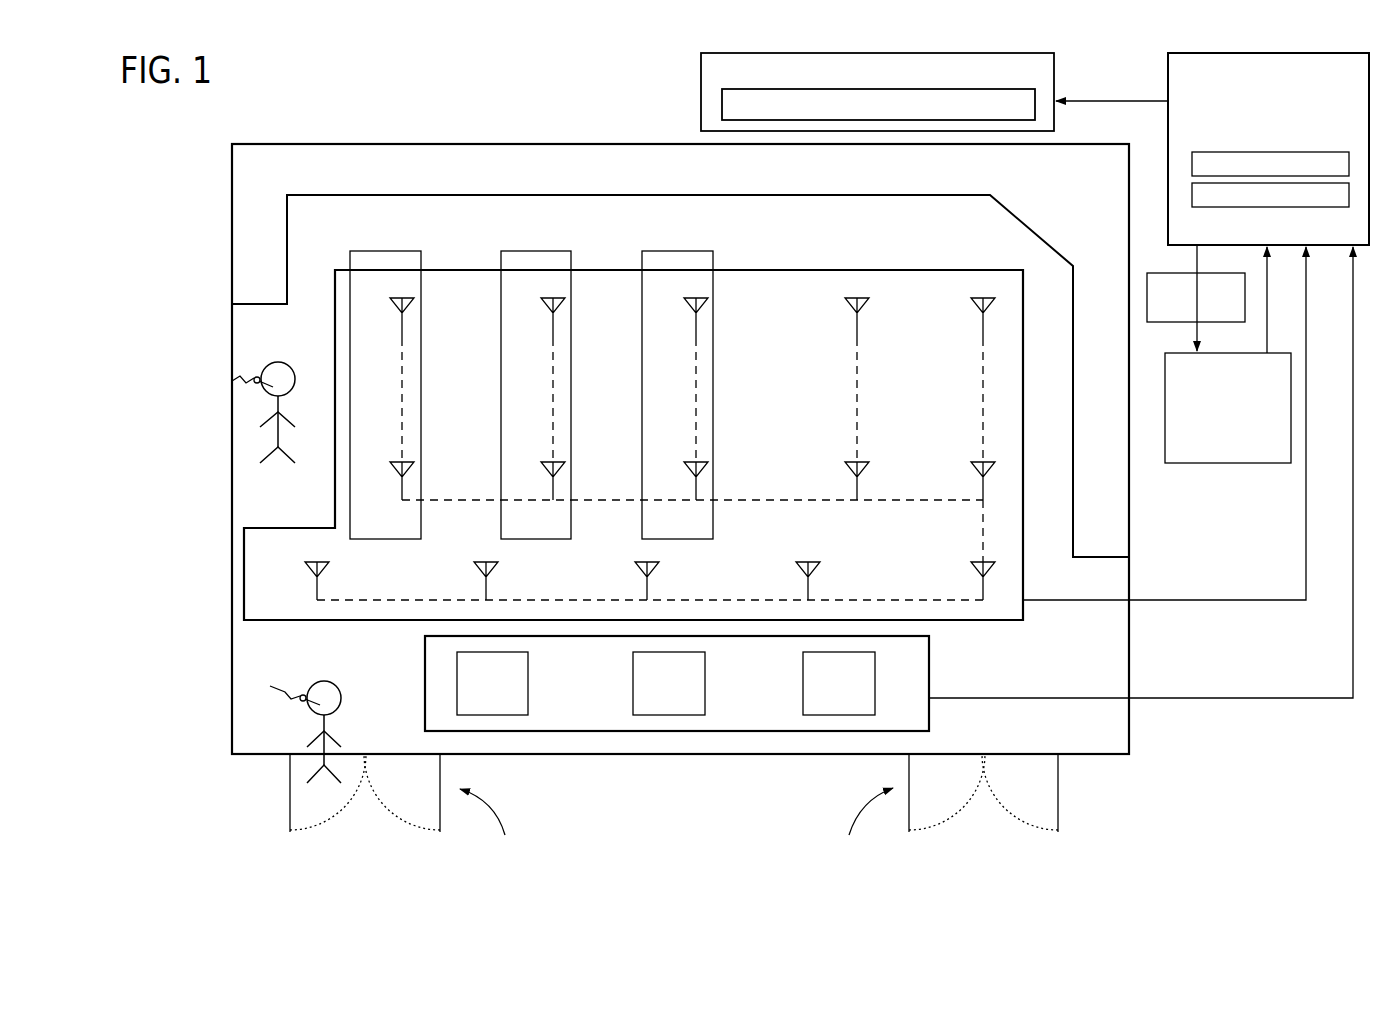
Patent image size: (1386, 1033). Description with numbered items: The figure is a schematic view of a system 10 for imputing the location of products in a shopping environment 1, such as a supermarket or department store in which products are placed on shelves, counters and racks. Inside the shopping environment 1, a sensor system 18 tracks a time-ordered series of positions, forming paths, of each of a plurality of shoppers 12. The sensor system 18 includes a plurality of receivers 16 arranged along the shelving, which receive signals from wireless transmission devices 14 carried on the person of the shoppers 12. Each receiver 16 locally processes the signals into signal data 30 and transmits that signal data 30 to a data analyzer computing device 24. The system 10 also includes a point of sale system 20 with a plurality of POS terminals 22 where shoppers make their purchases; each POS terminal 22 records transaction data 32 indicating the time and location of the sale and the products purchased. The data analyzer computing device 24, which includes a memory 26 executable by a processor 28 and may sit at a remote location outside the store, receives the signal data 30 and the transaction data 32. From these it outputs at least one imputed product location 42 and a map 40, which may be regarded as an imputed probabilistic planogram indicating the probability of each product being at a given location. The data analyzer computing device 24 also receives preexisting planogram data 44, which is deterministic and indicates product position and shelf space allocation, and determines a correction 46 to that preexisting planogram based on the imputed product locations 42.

The shopping environment 1 is at (238, 143).
The system 10 is at (198, 159).
The shopper 12 is at (291, 367).
The wireless transmission device 14 is at (256, 377).
The receiver 16 is at (388, 321).
The sensor system 18 is at (774, 262).
The point of sale (POS) system 20 is at (938, 647).
The POS terminal 22 is at (502, 706).
The data analyzer computing device 24 is at (1278, 133).
The memory 26 is at (1321, 173).
The processor 28 is at (1338, 203).
The signal data 30 is at (1333, 374).
The transaction data 32 is at (1377, 328).
The map 40 is at (701, 72).
The imputed product location 42 is at (722, 105).
The preexisting planogram data 44 is at (1228, 463).
The correction 46 is at (1175, 322).